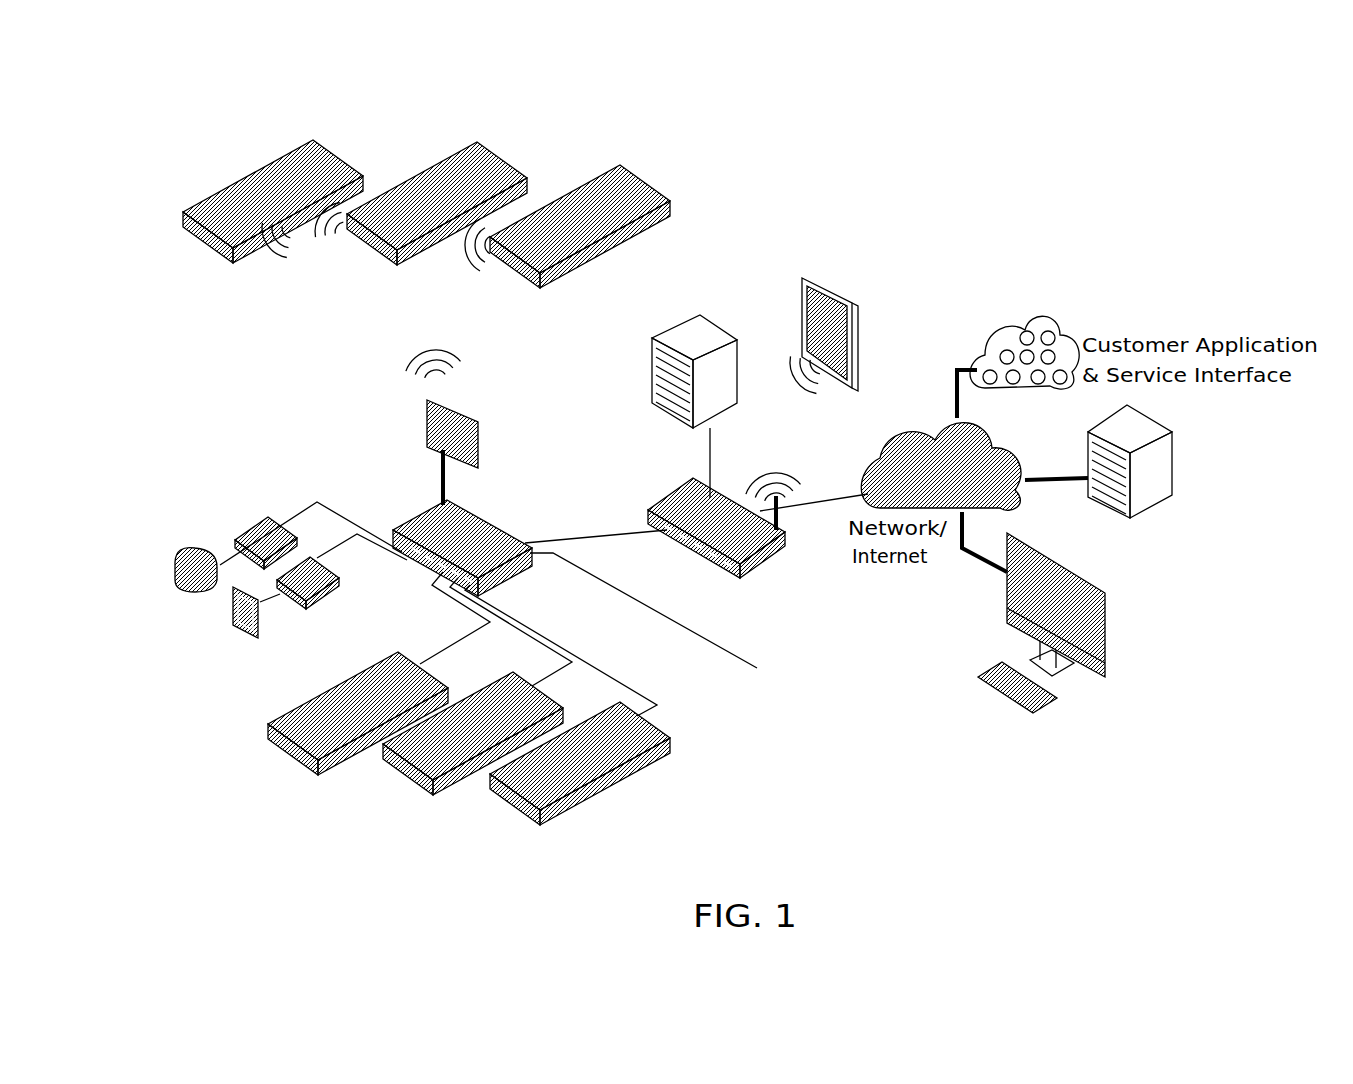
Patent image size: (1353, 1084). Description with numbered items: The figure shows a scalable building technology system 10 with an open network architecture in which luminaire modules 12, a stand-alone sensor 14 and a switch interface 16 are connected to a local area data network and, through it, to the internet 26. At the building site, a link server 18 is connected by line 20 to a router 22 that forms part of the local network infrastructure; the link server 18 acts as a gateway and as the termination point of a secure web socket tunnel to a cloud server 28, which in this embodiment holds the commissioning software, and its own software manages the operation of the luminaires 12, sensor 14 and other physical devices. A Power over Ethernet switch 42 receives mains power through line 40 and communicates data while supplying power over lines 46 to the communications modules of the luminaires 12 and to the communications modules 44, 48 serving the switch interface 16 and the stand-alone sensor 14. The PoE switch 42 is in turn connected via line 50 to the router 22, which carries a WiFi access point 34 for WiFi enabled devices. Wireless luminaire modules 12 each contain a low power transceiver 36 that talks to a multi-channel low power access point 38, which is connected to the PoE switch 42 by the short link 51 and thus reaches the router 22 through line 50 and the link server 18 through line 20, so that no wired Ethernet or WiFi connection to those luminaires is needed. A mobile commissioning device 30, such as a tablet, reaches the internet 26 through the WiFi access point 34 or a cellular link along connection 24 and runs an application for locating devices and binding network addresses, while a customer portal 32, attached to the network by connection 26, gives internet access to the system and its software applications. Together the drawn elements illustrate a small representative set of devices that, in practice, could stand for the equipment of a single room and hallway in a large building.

The building technology system 10 is at (857, 147).
The luminaire modules 12 is at (232, 197).
The stand-alone sensor 14 is at (187, 557).
The switch interface 16 is at (238, 625).
The link server 18 is at (685, 327).
The line 20 is at (712, 442).
The router 22 is at (667, 497).
The network connection 24 is at (813, 500).
The internet 26 is at (960, 520).
The cloud server 28 is at (1162, 468).
The mobile commissioning device 30 is at (853, 373).
The customer portal 32 is at (1095, 603).
The WiFi access point 34 is at (790, 500).
The low power transceiver 36 is at (263, 248).
The low power access point 38 is at (442, 407).
The line 40 is at (758, 668).
The Power over Ethernet switch 42 is at (472, 518).
The communications module 44 is at (315, 582).
The lines 46 is at (293, 512).
The communications module 48 is at (260, 528).
The line 50 is at (632, 540).
The low power access point connection 51 is at (440, 490).